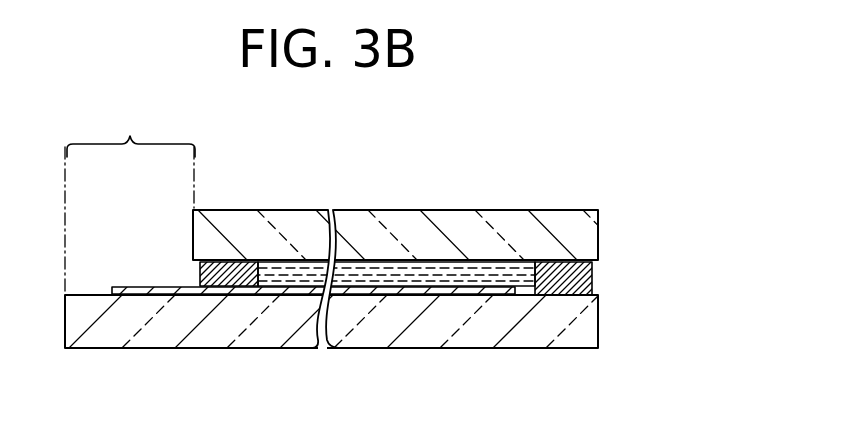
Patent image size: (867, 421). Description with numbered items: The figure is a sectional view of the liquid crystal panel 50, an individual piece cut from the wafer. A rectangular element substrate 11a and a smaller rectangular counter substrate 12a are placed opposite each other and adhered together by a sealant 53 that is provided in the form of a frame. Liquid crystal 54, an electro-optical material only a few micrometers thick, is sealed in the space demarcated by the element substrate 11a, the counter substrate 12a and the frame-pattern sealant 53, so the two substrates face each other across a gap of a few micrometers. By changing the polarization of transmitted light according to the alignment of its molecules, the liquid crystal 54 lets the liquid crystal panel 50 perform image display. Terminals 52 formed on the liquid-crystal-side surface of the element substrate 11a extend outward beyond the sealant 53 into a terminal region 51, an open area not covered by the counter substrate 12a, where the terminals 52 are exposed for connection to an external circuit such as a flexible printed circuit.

The liquid crystal panel 50 is at (606, 156).
The terminal region 51 is at (130, 199).
The terminals 52 is at (147, 287).
The sealant 53 is at (244, 259).
The liquid crystal 54 is at (473, 273).
The element substrate 11a is at (590, 326).
The counter substrate 12a is at (590, 234).